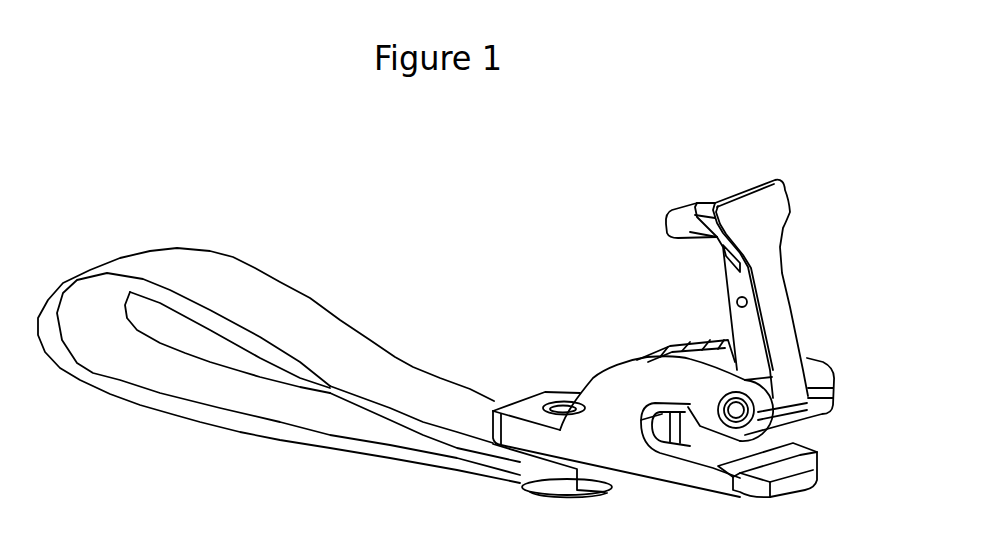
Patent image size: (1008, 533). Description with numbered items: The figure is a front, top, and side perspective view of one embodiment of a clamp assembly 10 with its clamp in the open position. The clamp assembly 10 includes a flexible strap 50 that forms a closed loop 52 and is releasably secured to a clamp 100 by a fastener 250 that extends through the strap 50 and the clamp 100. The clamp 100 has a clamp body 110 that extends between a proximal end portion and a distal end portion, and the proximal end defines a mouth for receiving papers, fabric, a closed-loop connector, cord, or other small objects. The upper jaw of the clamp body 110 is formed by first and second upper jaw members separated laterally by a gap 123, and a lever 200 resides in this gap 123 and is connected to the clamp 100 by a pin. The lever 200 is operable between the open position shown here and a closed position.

The clamp assembly 10 is at (747, 160).
The flexible strap 50 is at (260, 265).
The closed loop 52 is at (93, 303).
The clamp 100 is at (806, 359).
The clamp body 110 is at (624, 402).
The gap 123 is at (712, 357).
The lever 200 is at (766, 273).
The fastener 250 is at (564, 406).